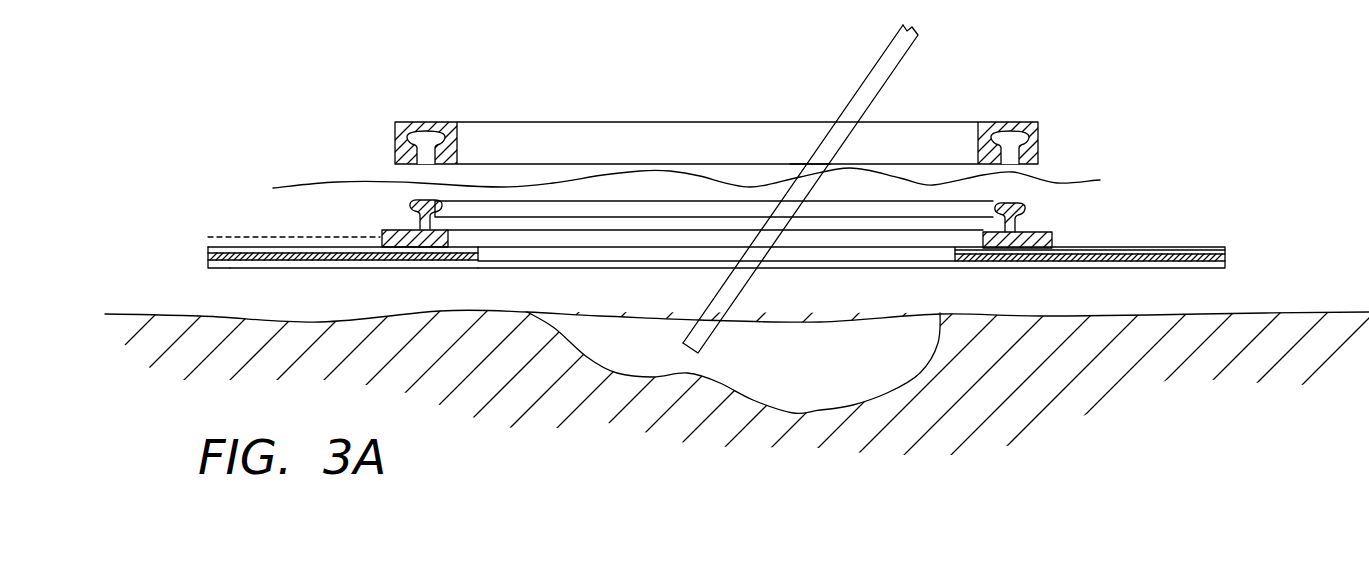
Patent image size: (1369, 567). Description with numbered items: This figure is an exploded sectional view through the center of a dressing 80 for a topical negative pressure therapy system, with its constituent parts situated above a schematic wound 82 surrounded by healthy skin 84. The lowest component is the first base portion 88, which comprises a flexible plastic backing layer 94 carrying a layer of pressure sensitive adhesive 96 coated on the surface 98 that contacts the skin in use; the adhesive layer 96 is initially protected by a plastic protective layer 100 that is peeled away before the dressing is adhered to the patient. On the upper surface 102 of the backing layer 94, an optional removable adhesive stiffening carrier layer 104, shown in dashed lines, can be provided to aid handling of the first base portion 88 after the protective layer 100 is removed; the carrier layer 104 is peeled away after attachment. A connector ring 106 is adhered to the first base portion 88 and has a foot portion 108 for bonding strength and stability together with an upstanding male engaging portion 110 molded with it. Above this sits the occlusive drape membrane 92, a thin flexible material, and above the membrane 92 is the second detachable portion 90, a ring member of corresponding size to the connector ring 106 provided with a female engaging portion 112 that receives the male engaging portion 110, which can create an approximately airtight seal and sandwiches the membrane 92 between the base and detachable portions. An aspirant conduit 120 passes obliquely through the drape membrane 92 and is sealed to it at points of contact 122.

The dressing 80 is at (895, 72).
The wound 82 is at (773, 369).
The healthy skin 84 is at (1287, 313).
The first base portion 88 is at (1232, 252).
The second detachable portion 90 is at (1046, 128).
The membrane 92 is at (1073, 182).
The backing layer 94 is at (217, 250).
The adhesive layer 96 is at (213, 265).
The surface 98 is at (259, 256).
The protective layer 100 is at (273, 266).
The upper surface 102 is at (1112, 246).
The carrier layer 104 is at (1175, 237).
The connector ring 106 is at (1015, 223).
The foot portion 108 is at (383, 233).
The male engaging portion 110 is at (422, 204).
The female engaging portion 112 is at (430, 138).
The aspirant conduit 120 is at (872, 70).
The points of contact 122 is at (810, 167).